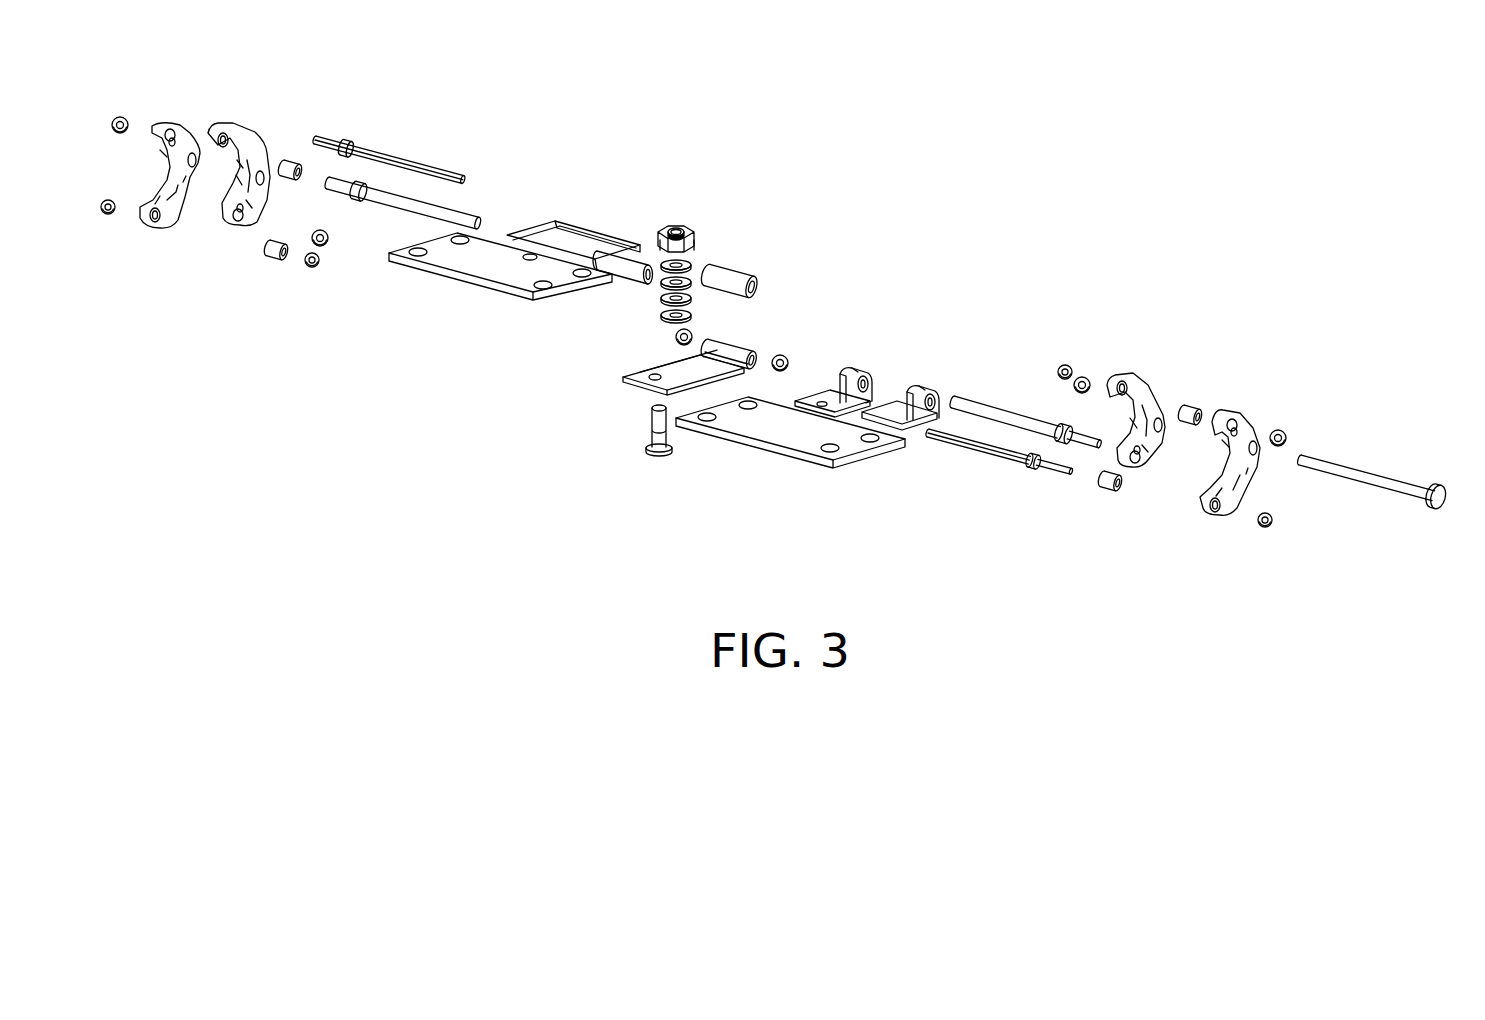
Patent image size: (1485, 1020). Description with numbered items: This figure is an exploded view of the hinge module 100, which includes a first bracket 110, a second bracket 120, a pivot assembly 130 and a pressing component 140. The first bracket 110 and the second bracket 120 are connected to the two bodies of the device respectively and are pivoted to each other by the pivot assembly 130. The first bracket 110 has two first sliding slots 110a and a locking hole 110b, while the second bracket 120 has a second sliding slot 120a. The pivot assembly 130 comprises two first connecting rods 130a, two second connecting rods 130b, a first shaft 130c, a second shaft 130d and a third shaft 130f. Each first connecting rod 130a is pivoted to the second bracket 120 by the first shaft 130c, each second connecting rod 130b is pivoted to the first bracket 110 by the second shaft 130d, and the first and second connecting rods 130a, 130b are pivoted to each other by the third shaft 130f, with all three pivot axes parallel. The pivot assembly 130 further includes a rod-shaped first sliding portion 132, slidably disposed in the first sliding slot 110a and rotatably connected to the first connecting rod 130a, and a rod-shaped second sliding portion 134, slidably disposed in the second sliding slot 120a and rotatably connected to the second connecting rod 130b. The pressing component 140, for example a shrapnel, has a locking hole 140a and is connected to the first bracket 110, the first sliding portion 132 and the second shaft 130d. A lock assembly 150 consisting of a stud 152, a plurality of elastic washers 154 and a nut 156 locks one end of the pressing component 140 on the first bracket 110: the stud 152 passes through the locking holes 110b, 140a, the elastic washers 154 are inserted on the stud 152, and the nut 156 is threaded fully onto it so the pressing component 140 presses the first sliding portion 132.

The hinge module 100 is at (250, 586).
The first bracket 110 is at (800, 443).
The first sliding slot 110a is at (839, 400).
The locking hole 110b is at (814, 403).
The second bracket 120 is at (495, 268).
The second sliding slot 120a is at (618, 253).
The pivot assembly 130 is at (1421, 538).
The first connecting rod 130a is at (166, 215).
The second connecting rod 130b is at (250, 148).
The first shaft 130c is at (382, 196).
The second shaft 130d is at (1008, 420).
The third shaft 130f is at (1357, 473).
The first sliding portion 132 is at (1002, 460).
The second sliding portion 134 is at (433, 170).
The pressing component 140 is at (693, 370).
The locking hole 140a is at (650, 377).
The lock assembly 150 is at (673, 220).
The stud 152 is at (647, 443).
The elastic washers 154 is at (657, 281).
The nut 156 is at (693, 237).